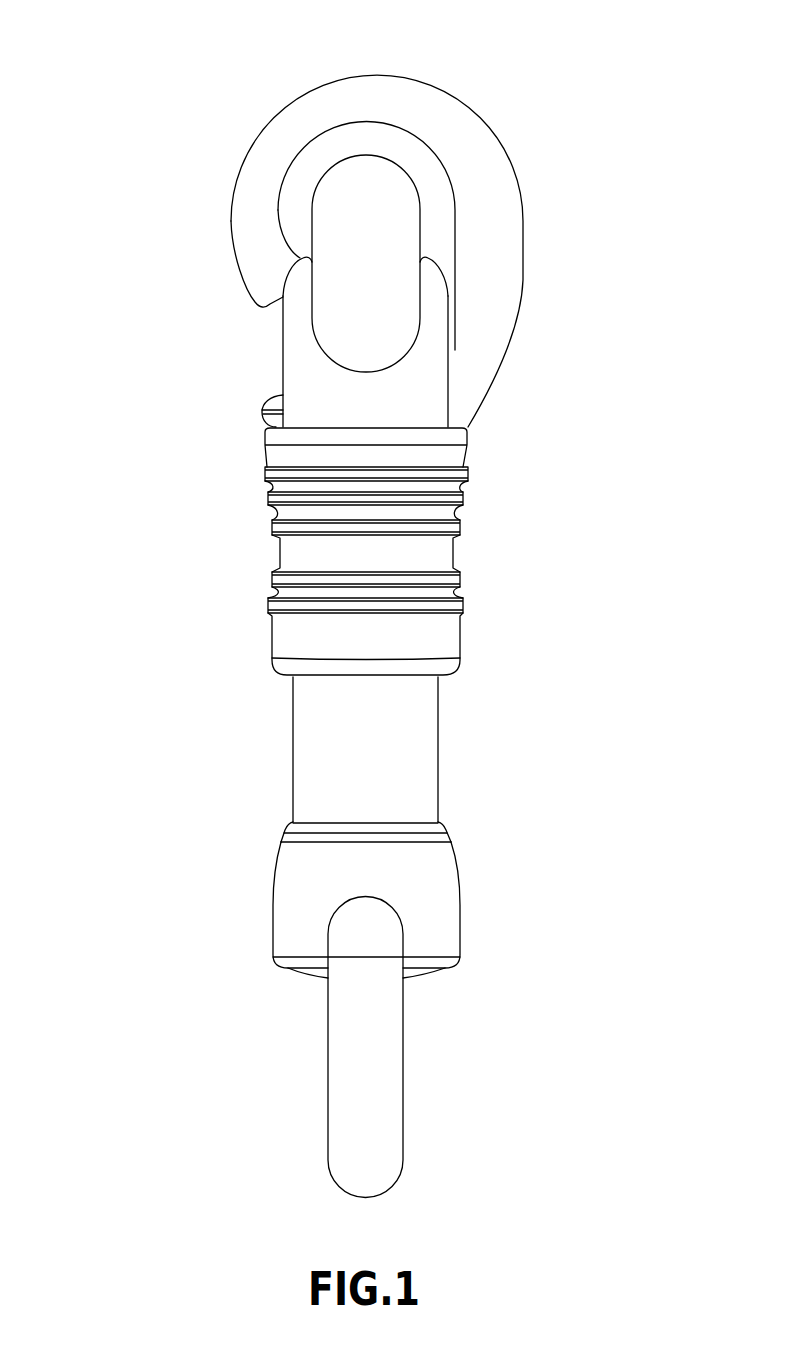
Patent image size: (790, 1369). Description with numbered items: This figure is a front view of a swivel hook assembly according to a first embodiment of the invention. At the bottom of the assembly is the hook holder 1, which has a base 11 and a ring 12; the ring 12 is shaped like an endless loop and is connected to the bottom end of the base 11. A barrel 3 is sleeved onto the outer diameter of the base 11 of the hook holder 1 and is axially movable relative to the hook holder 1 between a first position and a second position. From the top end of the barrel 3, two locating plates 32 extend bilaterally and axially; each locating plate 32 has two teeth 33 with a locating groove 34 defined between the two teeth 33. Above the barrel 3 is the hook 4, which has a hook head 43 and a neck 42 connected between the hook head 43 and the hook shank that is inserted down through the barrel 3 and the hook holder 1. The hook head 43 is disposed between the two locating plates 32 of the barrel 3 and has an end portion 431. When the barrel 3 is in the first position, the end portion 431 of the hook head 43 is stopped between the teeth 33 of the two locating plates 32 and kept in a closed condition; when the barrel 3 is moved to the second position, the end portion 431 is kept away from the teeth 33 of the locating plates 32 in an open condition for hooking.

The hook holder 1 is at (633, 705).
The base 11 is at (415, 740).
The ring 12 is at (403, 1048).
The barrel 3 is at (487, 468).
The locating plates 32 is at (362, 408).
The teeth 33 is at (432, 300).
The locating groove 34 is at (366, 372).
The hook 4 is at (533, 160).
The neck 42 is at (270, 405).
The hook head 43 is at (420, 110).
The end portion 431 is at (277, 293).